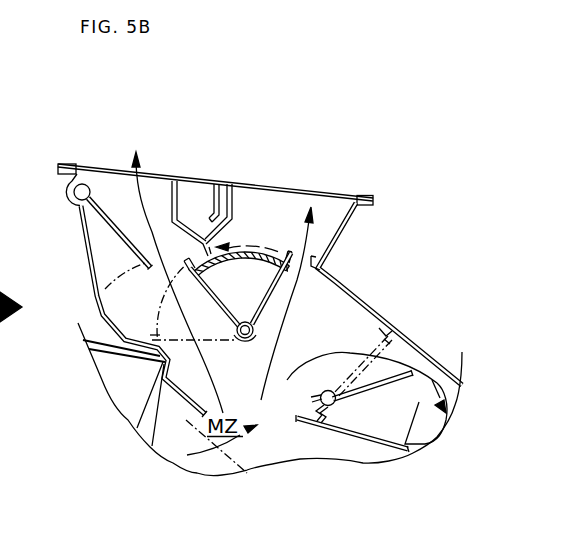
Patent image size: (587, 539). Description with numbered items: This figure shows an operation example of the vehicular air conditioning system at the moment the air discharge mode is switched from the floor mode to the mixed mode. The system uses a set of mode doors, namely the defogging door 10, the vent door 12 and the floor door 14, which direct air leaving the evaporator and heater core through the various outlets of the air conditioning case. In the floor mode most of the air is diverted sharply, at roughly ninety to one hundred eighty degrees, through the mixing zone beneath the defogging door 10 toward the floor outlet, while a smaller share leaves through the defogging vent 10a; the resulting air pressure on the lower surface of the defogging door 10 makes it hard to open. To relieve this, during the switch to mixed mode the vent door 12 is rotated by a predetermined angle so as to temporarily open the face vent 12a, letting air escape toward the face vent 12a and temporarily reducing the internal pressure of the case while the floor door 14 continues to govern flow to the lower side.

The defogging door 10 is at (123, 231).
The defogging vent 10a is at (111, 181).
The vent door 12 is at (250, 252).
The face vent 12a is at (292, 202).
The floor door 14 is at (383, 337).